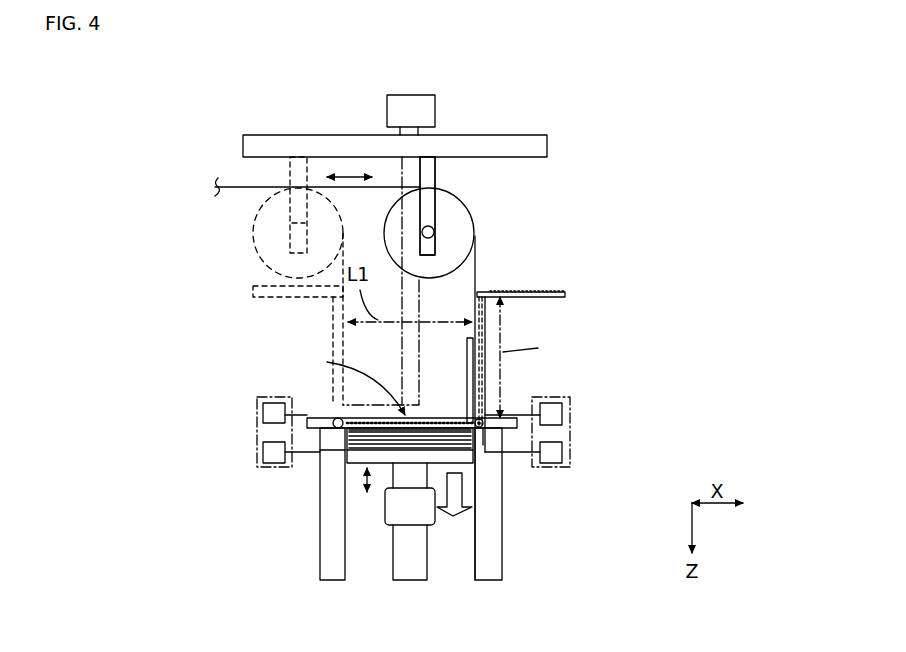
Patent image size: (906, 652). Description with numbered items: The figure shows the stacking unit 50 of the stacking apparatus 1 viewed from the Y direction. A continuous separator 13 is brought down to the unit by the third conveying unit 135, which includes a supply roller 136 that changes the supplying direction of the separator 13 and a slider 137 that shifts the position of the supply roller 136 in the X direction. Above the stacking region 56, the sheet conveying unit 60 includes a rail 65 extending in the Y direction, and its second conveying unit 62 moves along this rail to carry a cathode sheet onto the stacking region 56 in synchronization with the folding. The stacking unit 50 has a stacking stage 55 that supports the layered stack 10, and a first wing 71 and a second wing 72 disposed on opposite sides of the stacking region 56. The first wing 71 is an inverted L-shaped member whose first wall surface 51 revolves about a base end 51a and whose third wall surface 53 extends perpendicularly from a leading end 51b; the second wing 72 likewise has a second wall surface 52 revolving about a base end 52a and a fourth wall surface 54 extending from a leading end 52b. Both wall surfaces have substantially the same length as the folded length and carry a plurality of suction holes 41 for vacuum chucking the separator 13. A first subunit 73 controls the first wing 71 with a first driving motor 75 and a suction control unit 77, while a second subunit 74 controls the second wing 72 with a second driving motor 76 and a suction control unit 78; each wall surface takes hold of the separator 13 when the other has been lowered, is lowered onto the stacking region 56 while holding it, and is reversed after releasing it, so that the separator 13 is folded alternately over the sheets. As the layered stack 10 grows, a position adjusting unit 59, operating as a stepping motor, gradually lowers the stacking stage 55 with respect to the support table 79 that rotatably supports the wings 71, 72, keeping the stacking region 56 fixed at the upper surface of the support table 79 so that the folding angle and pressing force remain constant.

The stacking apparatus 1 is at (188, 243).
The layered stack 10 is at (450, 443).
The separator 13 is at (228, 185).
The suction holes 41 is at (490, 290).
The stacking unit 50 is at (563, 364).
The first wall surface 51 is at (388, 420).
The base end 51a is at (257, 287).
The leading end 51b is at (482, 430).
The second wall surface 52 is at (487, 390).
The base end 52a is at (481, 427).
The leading end 52b is at (485, 292).
The third wall surface 53 is at (273, 297).
The fourth wall surface 54 is at (538, 292).
The stacking stage 55 is at (467, 457).
The stacking region 56 is at (372, 435).
The position adjusting unit 59 is at (421, 517).
The sheet conveying unit 60 is at (382, 221).
The second conveying unit 62 is at (401, 277).
The rail 65 is at (418, 105).
The first wing 71 is at (331, 335).
The second wing 72 is at (488, 357).
The first subunit 73 is at (258, 435).
The second subunit 74 is at (555, 432).
The first driving motor 75 is at (265, 458).
The second driving motor 76 is at (552, 455).
The suction control unit 77 is at (263, 412).
The suction control unit 78 is at (555, 413).
The support table 79 is at (330, 571).
The third conveying unit 135 is at (419, 172).
The supply roller 136 is at (452, 222).
The slider 137 is at (533, 152).